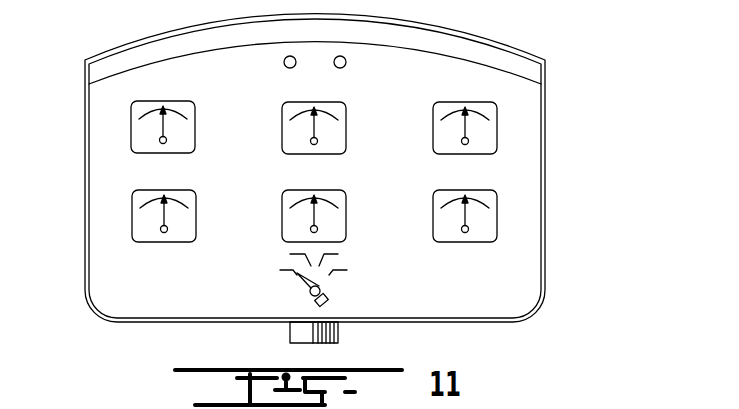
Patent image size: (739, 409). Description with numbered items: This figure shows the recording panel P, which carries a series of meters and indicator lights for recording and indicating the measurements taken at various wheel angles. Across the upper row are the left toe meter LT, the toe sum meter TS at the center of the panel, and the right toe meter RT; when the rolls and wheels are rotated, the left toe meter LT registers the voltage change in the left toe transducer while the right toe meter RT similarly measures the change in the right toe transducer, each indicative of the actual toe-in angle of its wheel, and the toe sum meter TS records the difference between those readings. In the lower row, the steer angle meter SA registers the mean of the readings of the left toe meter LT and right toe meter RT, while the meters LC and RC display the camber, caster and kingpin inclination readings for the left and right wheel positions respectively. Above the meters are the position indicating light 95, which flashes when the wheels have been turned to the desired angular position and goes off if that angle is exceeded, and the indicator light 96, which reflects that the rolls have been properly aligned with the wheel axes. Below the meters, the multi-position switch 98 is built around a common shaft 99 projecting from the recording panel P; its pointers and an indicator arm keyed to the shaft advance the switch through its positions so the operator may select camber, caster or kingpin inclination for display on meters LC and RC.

The position indicating light 95 is at (286, 58).
The indicator light 96 is at (345, 58).
The left toe meter LT is at (131, 128).
The toe sum meter TS is at (282, 104).
The right toe meter RT is at (497, 122).
The left wheel meter LC is at (132, 216).
The steer angle meter SA is at (282, 216).
The right wheel meter RC is at (497, 214).
The recording panel P is at (553, 172).
The multi-position switch 98 is at (306, 302).
The common shaft 99 is at (319, 292).